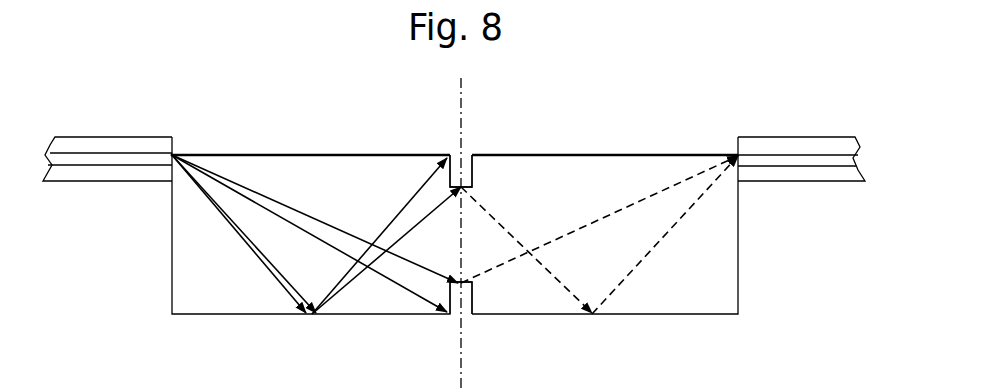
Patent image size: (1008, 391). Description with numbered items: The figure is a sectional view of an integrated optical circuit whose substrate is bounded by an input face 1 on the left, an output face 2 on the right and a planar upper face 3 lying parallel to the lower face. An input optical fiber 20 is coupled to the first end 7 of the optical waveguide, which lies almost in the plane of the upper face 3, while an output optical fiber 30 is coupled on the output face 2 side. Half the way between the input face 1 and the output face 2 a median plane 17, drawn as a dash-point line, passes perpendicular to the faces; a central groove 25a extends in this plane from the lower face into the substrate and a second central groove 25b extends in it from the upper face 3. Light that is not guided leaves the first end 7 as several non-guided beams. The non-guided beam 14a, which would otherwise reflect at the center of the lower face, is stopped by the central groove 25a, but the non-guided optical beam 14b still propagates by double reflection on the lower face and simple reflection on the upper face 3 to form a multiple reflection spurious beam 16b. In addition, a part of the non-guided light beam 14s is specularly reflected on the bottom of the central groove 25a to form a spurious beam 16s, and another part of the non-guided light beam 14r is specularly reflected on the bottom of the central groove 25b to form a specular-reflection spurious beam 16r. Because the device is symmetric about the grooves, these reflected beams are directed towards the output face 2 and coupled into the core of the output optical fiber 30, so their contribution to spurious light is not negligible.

The input face 1 is at (172, 272).
The output face 2 is at (738, 240).
The upper face 3 is at (673, 153).
The first end 7 is at (190, 165).
The non-guided beam 14a is at (245, 190).
The non-guided optical beam 14b is at (270, 265).
The non-guided light beam 14r is at (300, 296).
The non-guided light beam 14s is at (297, 200).
The multiple reflection spurious beam 16b is at (392, 221).
The specular-reflection spurious beam 16r is at (648, 253).
The spurious beam 16s is at (602, 217).
The median plane 17 is at (461, 385).
The input optical fiber 20 is at (77, 145).
The central groove 25a is at (465, 283).
The central groove 25b is at (466, 186).
The output optical fiber 30 is at (792, 145).